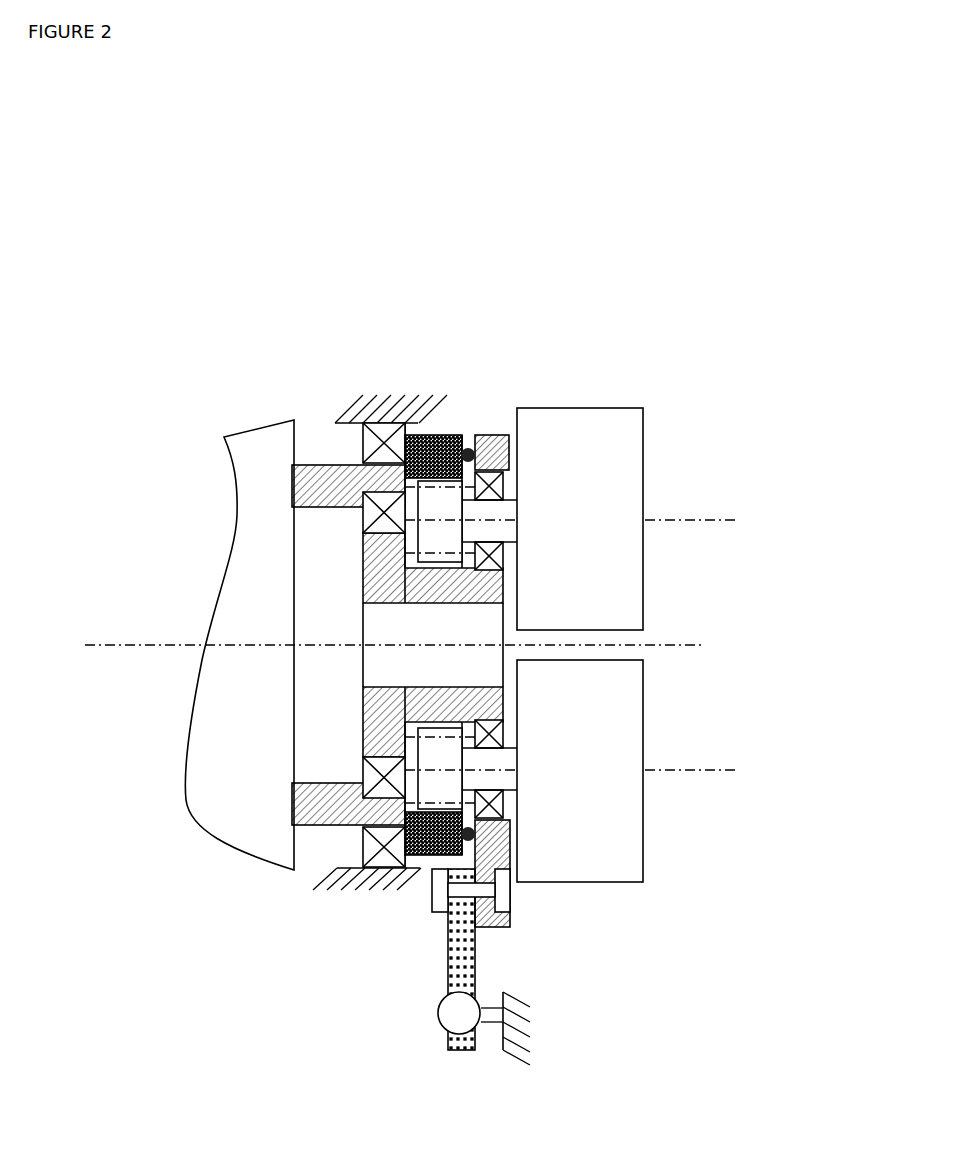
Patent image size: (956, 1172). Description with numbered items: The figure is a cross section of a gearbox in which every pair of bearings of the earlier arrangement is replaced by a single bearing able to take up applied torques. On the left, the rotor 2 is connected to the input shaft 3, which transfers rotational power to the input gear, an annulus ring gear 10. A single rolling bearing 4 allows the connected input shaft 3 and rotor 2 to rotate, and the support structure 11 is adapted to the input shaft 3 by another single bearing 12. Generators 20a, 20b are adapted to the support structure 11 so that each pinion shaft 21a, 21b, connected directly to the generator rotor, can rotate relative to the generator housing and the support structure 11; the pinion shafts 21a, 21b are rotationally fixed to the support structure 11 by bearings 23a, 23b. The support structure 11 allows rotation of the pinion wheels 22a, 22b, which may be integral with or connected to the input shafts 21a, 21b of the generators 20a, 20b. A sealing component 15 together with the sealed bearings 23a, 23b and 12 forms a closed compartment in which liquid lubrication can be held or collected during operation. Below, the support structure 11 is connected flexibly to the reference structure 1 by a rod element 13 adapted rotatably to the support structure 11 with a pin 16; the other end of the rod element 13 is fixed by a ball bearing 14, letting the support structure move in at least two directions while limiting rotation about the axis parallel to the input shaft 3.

The reference structure 1 is at (381, 388).
The rotor 2 is at (246, 426).
The input shaft 3 is at (311, 806).
The single rolling bearing 4 is at (380, 447).
The annulus ring gear 10 is at (431, 449).
The support structure 11 is at (382, 700).
The single bearing 12 is at (378, 513).
The rod element 13 is at (461, 952).
The ball bearing 14 is at (460, 1010).
The sealing component 15 is at (489, 440).
The pin 16 is at (503, 890).
The generator 20a is at (614, 471).
The generator 20b is at (614, 743).
The pinion shaft 21a is at (508, 506).
The pinion shaft 21b is at (508, 784).
The pinion wheel 22a is at (447, 527).
The pinion wheel 22b is at (447, 793).
The sealed bearing 23a is at (490, 558).
The sealed bearing 23b is at (490, 737).